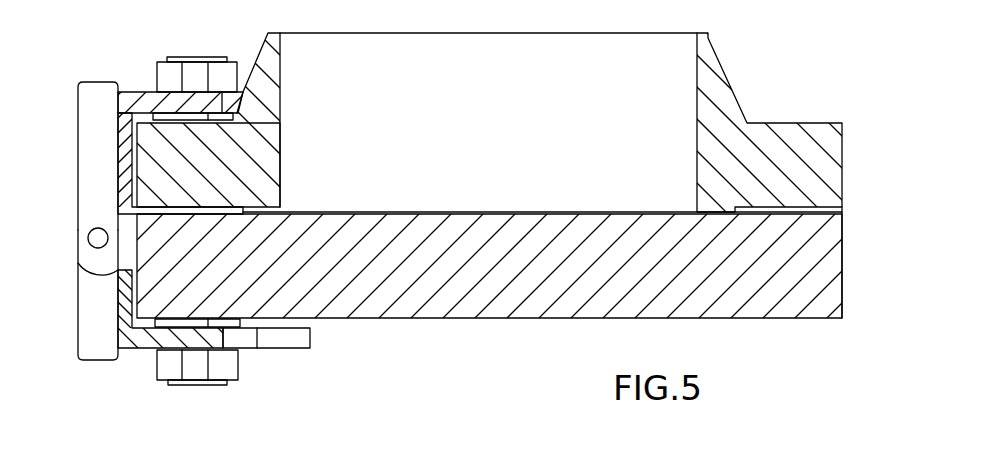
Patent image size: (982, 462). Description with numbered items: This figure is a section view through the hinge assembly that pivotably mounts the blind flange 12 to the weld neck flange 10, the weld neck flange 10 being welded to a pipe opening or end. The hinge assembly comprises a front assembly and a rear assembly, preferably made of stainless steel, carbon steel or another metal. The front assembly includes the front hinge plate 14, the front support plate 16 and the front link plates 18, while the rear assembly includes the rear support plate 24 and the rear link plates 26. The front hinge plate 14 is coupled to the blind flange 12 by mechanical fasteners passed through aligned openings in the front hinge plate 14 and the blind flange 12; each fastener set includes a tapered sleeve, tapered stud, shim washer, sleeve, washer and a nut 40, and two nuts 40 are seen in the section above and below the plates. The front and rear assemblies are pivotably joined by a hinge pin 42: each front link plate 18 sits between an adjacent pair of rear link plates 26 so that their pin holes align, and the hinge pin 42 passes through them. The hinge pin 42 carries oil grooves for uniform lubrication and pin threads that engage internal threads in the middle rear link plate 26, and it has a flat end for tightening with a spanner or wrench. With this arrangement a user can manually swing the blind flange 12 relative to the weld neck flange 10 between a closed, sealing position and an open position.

The weld neck flange 10 is at (730, 102).
The blind flange 12 is at (757, 313).
The front hinge plate 14 is at (292, 343).
The front support plate 16 is at (127, 308).
The front link plate 18 is at (97, 353).
The rear support plate 24 is at (127, 172).
The rear link plate 26 is at (95, 90).
The nut 40 is at (215, 67).
The hinge pin 42 is at (108, 238).